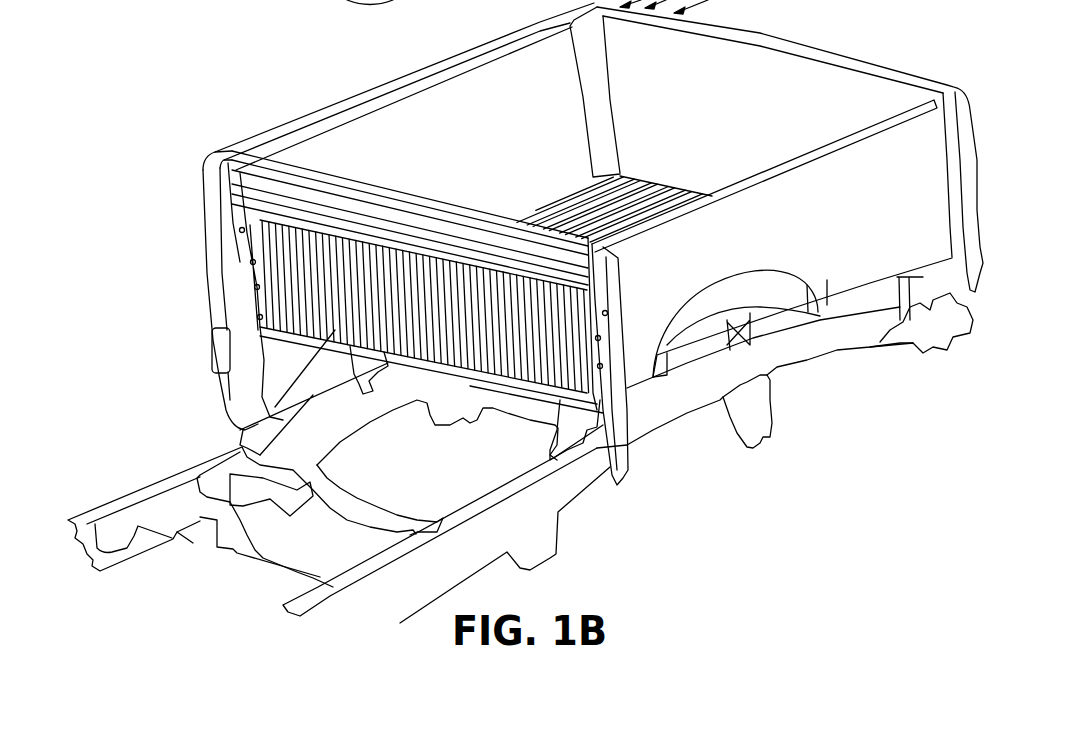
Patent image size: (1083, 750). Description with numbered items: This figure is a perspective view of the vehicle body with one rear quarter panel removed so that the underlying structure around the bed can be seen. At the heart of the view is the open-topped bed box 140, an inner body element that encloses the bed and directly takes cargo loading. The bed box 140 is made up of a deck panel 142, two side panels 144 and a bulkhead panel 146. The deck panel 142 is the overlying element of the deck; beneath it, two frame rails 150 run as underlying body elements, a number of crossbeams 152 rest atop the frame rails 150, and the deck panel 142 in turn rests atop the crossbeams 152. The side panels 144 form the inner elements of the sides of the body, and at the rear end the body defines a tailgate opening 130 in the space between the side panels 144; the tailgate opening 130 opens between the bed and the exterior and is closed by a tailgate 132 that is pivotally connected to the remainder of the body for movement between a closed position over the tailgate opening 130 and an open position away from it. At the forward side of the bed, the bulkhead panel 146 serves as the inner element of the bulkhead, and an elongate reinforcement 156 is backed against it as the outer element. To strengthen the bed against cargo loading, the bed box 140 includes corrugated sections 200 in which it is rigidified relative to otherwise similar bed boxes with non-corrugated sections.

The tailgate opening 130 is at (760, 70).
The tailgate 132 is at (860, 54).
The bed box 140 is at (580, 92).
The deck panel 142 is at (567, 190).
The side panels 144 is at (743, 181).
The bulkhead panel 146 is at (257, 237).
The frame rails 150 is at (660, 437).
The crossbeams 152 is at (660, 380).
The elongate reinforcement 156 is at (237, 198).
The corrugated sections 200 is at (278, 268).